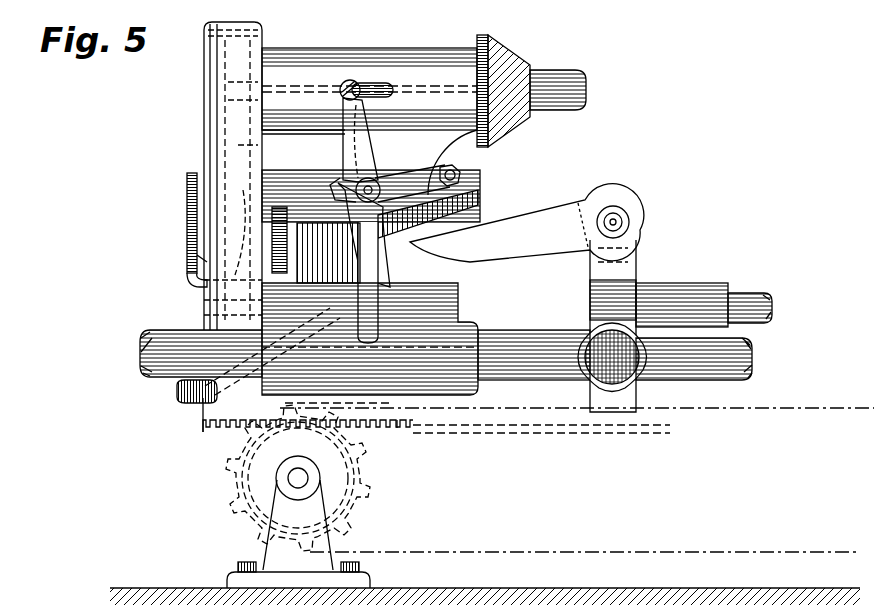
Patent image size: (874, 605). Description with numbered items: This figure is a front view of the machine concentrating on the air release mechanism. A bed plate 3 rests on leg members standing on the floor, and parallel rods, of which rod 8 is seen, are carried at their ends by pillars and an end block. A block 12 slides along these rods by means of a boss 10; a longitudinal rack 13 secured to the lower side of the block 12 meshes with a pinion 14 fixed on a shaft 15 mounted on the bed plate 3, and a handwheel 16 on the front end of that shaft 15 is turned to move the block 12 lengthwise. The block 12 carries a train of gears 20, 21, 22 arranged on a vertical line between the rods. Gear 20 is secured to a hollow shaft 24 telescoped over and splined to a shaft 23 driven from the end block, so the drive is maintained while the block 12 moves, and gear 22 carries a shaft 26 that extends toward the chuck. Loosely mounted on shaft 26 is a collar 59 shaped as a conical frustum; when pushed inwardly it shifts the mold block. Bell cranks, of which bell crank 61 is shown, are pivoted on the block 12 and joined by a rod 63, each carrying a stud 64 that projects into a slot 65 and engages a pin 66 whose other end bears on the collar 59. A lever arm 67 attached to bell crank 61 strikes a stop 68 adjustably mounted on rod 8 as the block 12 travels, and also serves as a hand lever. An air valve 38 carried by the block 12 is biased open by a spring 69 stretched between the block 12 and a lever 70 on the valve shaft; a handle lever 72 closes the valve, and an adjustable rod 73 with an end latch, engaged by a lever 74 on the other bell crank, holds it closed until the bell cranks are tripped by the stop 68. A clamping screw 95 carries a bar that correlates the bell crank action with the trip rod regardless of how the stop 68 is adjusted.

The bed plate 3 is at (660, 588).
The rod 8 is at (745, 350).
The boss 10 is at (440, 370).
The block 12 is at (425, 142).
The longitudinal rack 13 is at (397, 422).
The pinion 14 is at (330, 467).
The shaft 15 is at (298, 470).
The handwheel 16 is at (365, 507).
The gear 20 is at (232, 307).
The gear 21 is at (228, 158).
The gear 22 is at (235, 108).
The shaft 23 is at (750, 300).
The hollow shaft 24 is at (670, 290).
The shaft 26 is at (588, 85).
The air valve 38 is at (257, 385).
The collar 59 is at (515, 66).
The bell crank 61 is at (343, 150).
The rod 63 is at (462, 175).
The stud 64 is at (347, 80).
The slot 65 is at (405, 74).
The pin 66 is at (384, 82).
The lever arm 67 is at (455, 213).
The stop 68 is at (527, 223).
The spring 69 is at (178, 388).
The lever 70 is at (210, 400).
The handle lever 72 is at (188, 218).
The adjustable rod 73 is at (205, 248).
The lever 74 is at (185, 182).
The clamping screw 95 is at (632, 398).